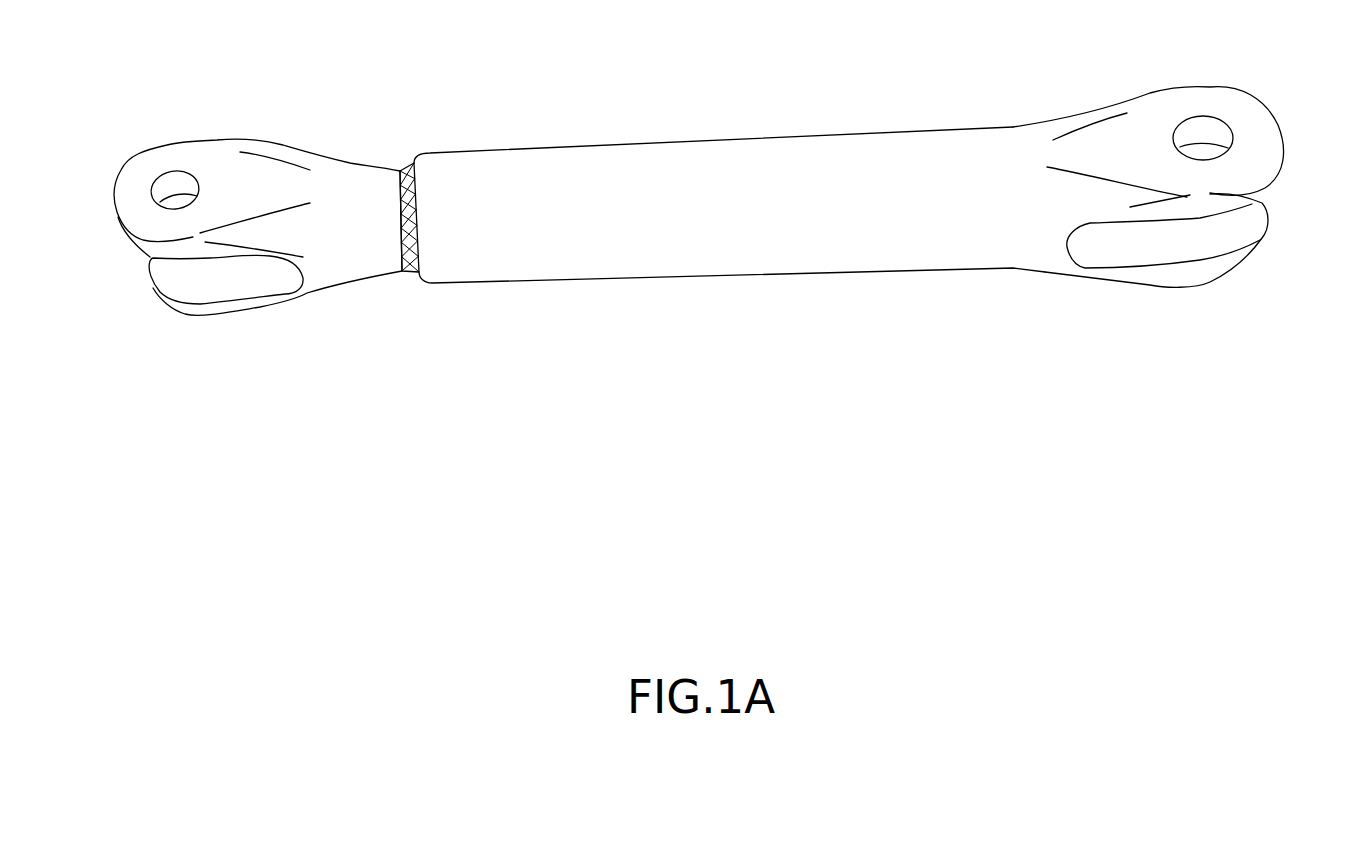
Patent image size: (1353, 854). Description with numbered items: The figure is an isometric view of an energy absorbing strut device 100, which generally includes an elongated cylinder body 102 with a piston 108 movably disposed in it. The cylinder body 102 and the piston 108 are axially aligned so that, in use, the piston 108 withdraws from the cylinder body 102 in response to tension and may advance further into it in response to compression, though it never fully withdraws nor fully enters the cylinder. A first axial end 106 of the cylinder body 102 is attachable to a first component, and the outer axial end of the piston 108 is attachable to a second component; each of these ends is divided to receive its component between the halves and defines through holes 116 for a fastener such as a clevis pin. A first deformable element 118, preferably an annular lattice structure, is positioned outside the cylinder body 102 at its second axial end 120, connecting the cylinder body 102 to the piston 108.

The energy absorbing strut device 100 is at (873, 92).
The elongated cylinder body 102 is at (658, 167).
The first axial end 106 is at (1118, 78).
The piston 108 is at (352, 173).
The through holes 116 is at (180, 189).
The first deformable element 118 is at (407, 255).
The second axial end 120 is at (395, 214).